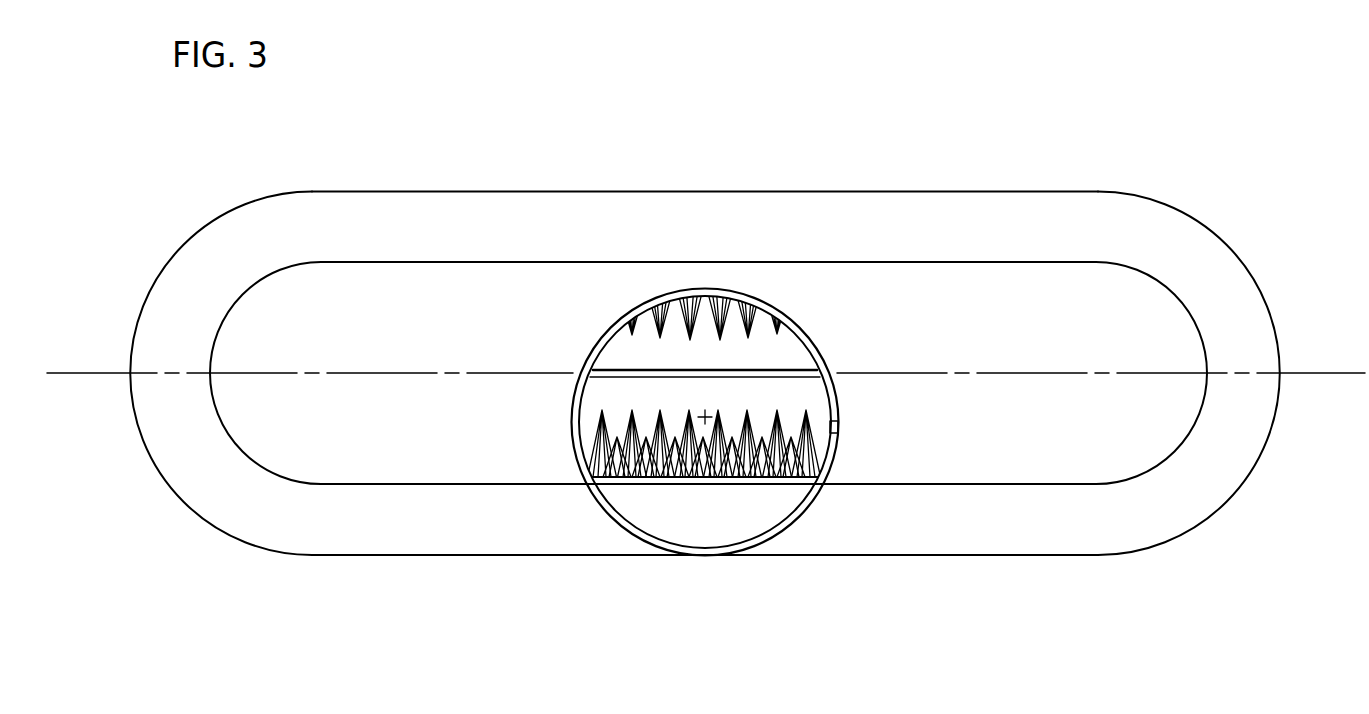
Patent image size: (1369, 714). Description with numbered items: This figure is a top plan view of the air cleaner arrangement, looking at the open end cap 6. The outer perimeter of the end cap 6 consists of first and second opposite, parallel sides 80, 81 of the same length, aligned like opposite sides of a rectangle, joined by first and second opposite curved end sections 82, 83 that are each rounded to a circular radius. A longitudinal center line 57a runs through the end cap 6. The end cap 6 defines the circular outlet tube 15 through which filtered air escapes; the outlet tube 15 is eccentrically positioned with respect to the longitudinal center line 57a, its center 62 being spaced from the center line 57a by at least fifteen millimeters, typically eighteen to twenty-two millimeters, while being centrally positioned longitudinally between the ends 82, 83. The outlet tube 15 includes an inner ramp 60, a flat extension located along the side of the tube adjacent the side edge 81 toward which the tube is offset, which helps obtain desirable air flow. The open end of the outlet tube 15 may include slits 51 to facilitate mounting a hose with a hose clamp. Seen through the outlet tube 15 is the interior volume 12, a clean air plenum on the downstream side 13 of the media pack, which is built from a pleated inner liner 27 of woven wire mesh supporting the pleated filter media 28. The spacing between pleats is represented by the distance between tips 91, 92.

The open end cap 6 is at (1055, 537).
The interior volume 12 is at (777, 360).
The downstream side 13 is at (696, 330).
The outlet tube 15 is at (800, 360).
The inner liner 27 is at (637, 418).
The filter media 28 is at (717, 418).
The slits 51 is at (836, 409).
The longitudinal center line 57a is at (1316, 370).
The inner ramp 60 is at (713, 528).
The center of circular outlet tube 62 is at (705, 417).
The first side 80 is at (713, 191).
The second side 81 is at (547, 556).
The first curved end section 82 is at (1281, 370).
The second curved end section 83 is at (130, 357).
The tip 91 is at (660, 333).
The tip 92 is at (660, 410).